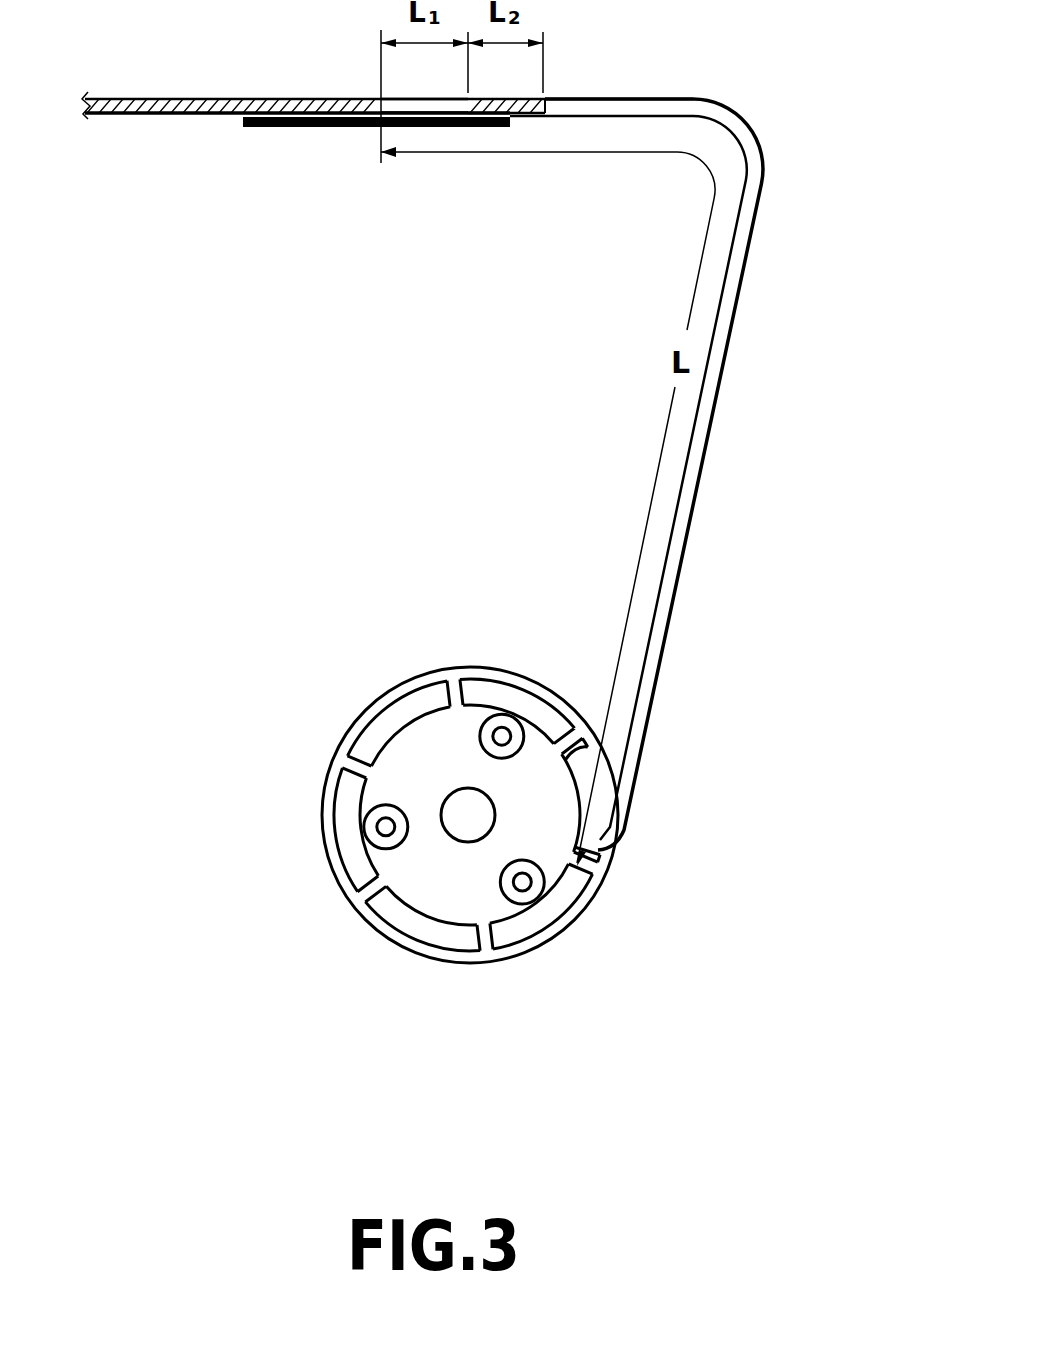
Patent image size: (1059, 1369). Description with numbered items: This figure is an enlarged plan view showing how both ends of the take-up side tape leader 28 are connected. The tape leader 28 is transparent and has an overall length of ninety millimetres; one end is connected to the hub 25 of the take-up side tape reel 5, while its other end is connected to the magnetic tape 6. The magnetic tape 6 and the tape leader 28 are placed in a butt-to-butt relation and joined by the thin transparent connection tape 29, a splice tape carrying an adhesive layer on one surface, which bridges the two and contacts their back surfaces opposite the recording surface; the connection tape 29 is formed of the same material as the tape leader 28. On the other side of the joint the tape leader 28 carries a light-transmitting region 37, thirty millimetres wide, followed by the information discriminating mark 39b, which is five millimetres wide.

The magnetic tape 6 is at (213, 98).
The light-transmitting region 37 is at (407, 98).
The information discriminating mark 39b is at (527, 117).
The connection tape 29 is at (435, 118).
The tape leader 28 is at (763, 198).
The take-up side tape reel 5 is at (407, 957).
The hub 25 is at (538, 920).